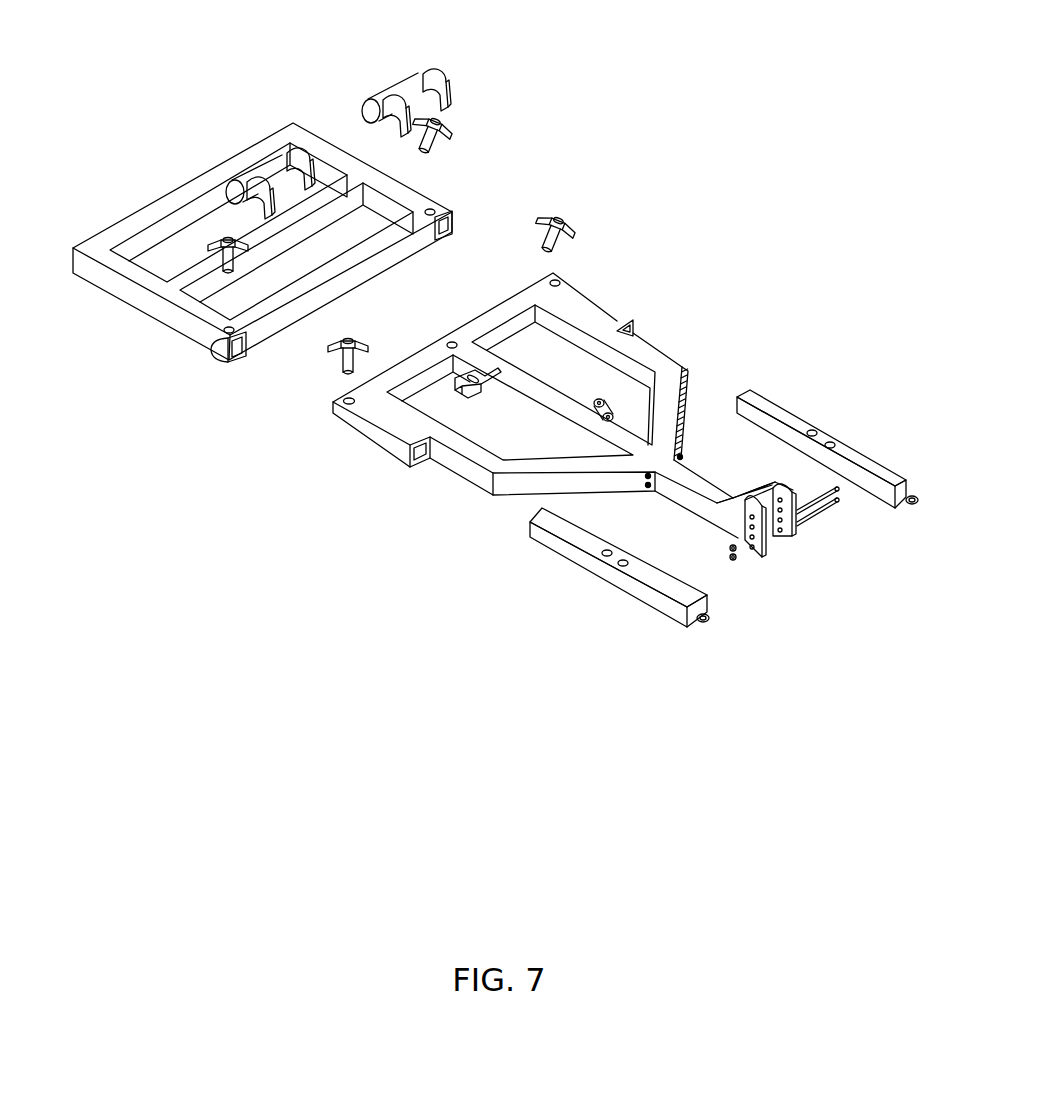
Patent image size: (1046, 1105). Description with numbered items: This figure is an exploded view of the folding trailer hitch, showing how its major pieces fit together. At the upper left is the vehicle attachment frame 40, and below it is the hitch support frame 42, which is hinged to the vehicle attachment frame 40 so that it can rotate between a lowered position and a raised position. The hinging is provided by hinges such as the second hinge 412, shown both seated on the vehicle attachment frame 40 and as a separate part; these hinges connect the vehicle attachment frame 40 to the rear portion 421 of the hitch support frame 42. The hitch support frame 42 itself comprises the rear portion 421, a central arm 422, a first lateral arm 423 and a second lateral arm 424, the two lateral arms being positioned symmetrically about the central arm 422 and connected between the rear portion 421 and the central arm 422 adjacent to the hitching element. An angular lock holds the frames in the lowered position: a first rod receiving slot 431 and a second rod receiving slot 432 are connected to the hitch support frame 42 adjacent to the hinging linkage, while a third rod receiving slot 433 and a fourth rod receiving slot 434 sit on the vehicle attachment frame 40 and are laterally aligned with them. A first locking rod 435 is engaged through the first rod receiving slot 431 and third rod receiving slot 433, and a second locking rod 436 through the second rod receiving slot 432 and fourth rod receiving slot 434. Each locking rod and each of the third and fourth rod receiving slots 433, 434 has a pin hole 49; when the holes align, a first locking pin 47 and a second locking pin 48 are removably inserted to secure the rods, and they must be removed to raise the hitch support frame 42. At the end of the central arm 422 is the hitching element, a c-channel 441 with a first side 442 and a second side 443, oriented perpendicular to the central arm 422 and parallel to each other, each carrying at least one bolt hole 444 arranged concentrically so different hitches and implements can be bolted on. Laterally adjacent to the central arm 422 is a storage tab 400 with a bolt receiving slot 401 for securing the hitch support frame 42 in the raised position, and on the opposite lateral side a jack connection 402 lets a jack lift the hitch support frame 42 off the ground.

The vehicle attachment frame 40 is at (166, 150).
The second hinge 412 is at (255, 178).
The first locking pin 47 is at (237, 267).
The second locking pin 48 is at (448, 138).
The pin hole 49 is at (432, 208).
The third rod receiving slot 433 is at (243, 363).
The fourth rod receiving slot 434 is at (454, 218).
The hitch support frame 42 is at (554, 375).
The rear portion 421 is at (493, 313).
The central arm 422 is at (677, 494).
The first lateral arm 423 is at (484, 492).
The second lateral arm 424 is at (679, 388).
The first rod receiving slot 431 is at (410, 468).
The second rod receiving slot 432 is at (636, 325).
The storage tab 400 is at (467, 392).
The bolt receiving slot 401 is at (495, 393).
The jack connection 402 is at (596, 402).
The first locking rod 435 is at (648, 582).
The second locking rod 436 is at (855, 460).
The c-channel 441 is at (793, 564).
The first side 442 is at (753, 553).
The second side 443 is at (800, 556).
The bolt hole 444 is at (799, 523).